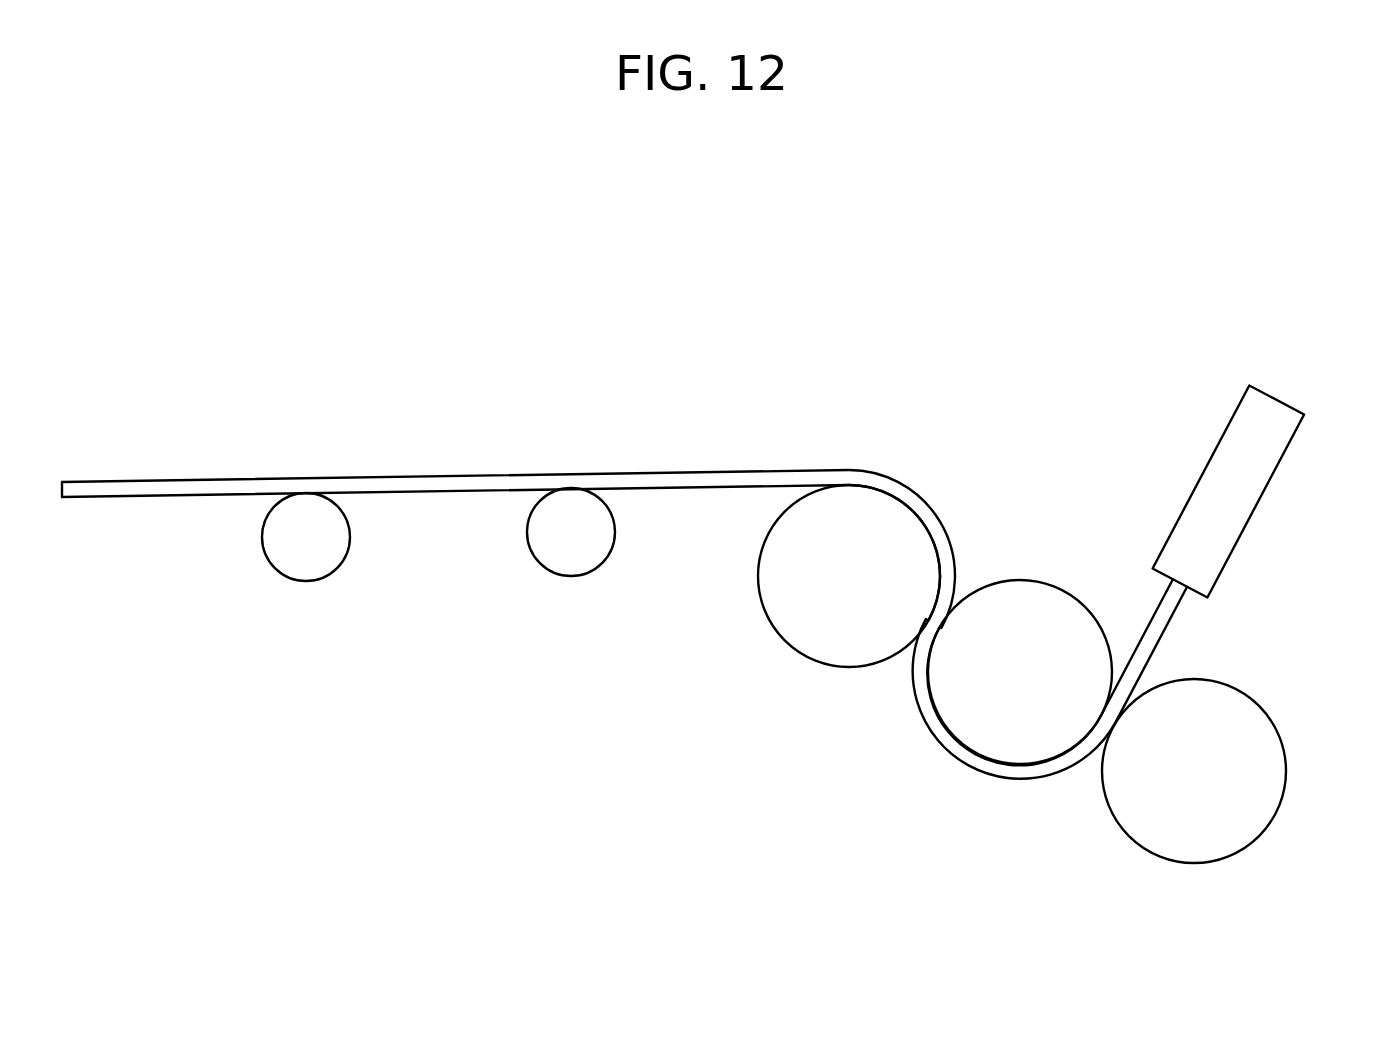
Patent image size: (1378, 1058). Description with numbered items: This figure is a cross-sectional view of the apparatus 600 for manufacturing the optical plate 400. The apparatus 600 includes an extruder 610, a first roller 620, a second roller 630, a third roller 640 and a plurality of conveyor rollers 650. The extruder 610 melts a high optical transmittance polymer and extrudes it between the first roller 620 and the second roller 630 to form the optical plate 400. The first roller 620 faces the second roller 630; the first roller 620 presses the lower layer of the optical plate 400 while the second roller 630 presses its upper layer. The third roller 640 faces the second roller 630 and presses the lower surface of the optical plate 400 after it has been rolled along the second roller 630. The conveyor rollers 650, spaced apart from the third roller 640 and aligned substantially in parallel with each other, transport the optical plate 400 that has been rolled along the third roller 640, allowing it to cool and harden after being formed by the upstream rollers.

The optical plate 400 is at (100, 516).
The apparatus for manufacturing the optical plate 600 is at (812, 661).
The extruder 610 is at (1232, 527).
The first roller 620 is at (1175, 835).
The second roller 630 is at (998, 740).
The third roller 640 is at (825, 645).
The conveyor rollers 650 is at (572, 558).